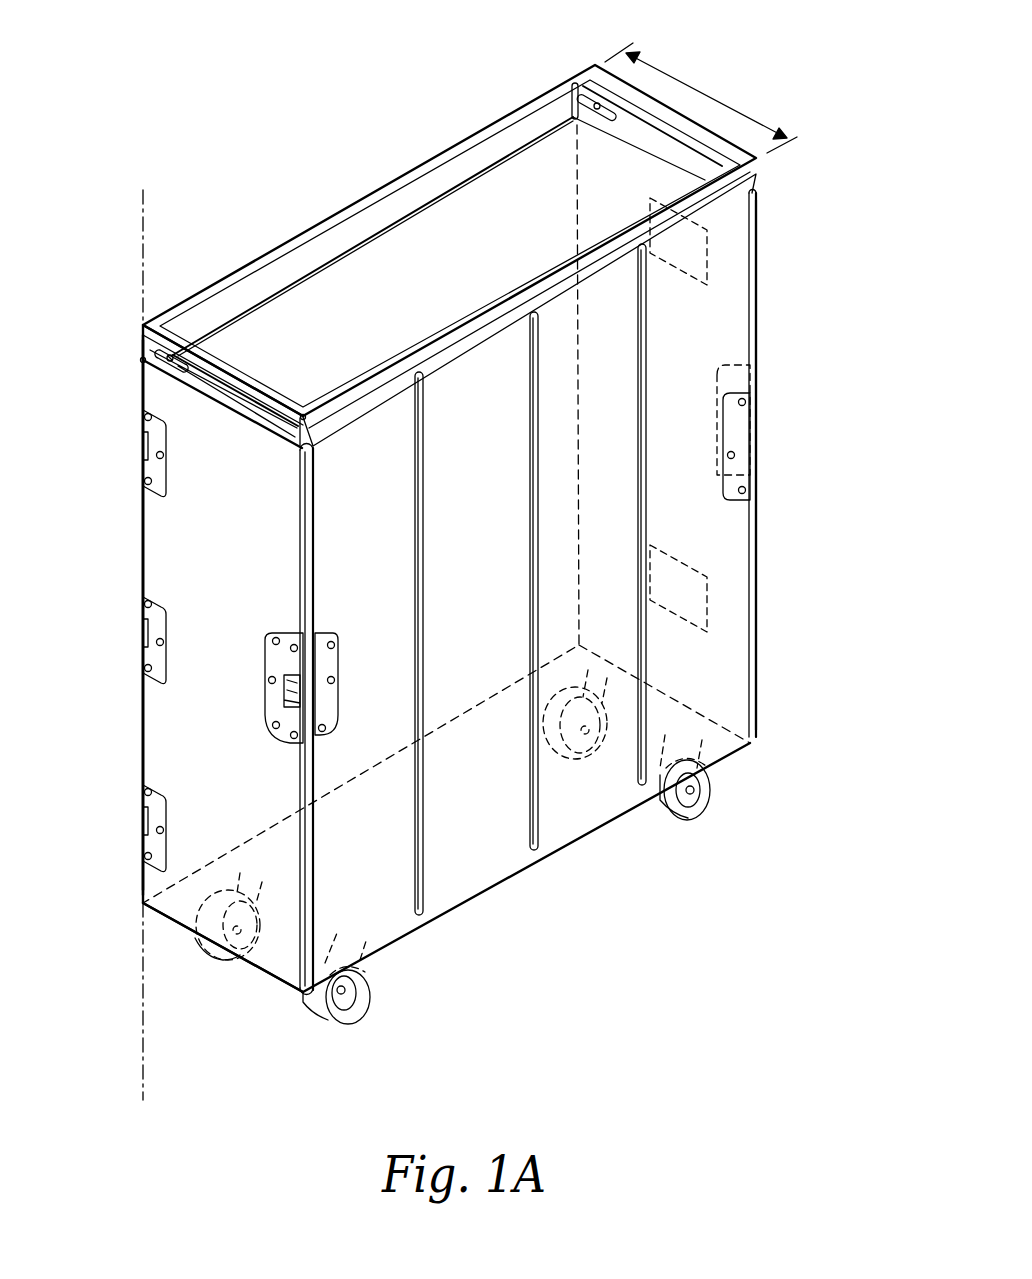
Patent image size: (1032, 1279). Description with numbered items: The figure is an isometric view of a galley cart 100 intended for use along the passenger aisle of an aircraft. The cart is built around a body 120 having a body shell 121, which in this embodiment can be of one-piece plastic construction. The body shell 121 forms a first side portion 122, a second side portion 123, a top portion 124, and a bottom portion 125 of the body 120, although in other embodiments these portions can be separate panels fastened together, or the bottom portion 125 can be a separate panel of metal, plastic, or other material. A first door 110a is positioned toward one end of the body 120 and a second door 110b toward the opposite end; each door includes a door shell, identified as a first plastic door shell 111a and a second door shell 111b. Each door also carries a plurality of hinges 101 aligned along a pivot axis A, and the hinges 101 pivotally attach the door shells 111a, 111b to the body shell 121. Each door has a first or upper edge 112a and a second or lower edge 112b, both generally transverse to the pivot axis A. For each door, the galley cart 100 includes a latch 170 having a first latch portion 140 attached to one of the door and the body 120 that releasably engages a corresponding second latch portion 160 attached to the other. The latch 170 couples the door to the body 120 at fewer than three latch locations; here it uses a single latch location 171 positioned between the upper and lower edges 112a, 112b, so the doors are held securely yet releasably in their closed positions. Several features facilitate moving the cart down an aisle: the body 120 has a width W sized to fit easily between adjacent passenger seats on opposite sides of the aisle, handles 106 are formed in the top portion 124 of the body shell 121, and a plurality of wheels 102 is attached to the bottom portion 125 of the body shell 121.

The galley cart 100 is at (267, 121).
The hinges 101 is at (143, 437).
The wheels 102 is at (355, 1003).
The handles 106 is at (585, 105).
The first door 110a is at (158, 522).
The second door 110b is at (740, 638).
The first plastic door shell 111a is at (207, 553).
The second door shell 111b is at (765, 597).
The upper edge 112a is at (239, 418).
The lower edge 112b is at (176, 925).
The body 120 is at (483, 134).
The body shell 121 is at (560, 818).
The first side portion 122 is at (368, 428).
The second side portion 123 is at (666, 346).
The top portion 124 is at (433, 243).
The bottom portion 125 is at (448, 864).
The first latch portion 140 is at (276, 703).
The second latch portion 160 is at (330, 740).
The latch 170 is at (277, 780).
The single latch location 171 is at (320, 709).
The pivot axis A is at (143, 197).
The width W is at (701, 98).